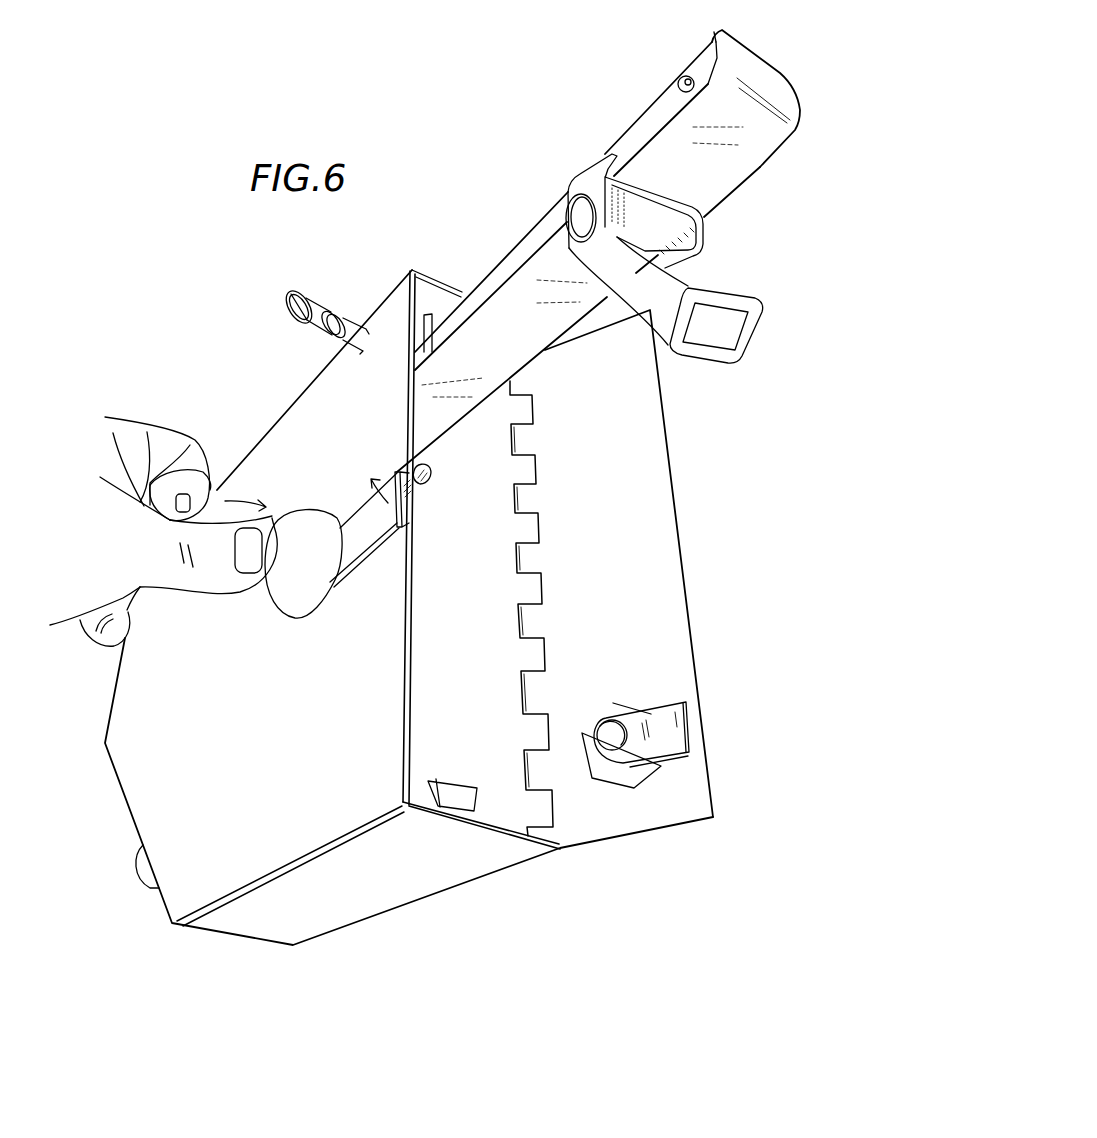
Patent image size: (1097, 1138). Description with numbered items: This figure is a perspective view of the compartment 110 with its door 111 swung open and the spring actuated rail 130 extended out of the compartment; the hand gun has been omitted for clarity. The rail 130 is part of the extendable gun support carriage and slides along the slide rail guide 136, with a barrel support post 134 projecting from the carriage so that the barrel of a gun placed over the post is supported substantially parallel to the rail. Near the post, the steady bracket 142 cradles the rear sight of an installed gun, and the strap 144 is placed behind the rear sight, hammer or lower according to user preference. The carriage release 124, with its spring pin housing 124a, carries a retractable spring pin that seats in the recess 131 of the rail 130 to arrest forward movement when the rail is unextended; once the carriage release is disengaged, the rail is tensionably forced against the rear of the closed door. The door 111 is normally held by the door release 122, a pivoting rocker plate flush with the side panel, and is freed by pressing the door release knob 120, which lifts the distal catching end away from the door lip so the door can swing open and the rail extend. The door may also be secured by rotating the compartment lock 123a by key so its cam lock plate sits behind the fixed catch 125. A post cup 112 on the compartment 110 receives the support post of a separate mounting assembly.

The compartment 110 is at (408, 897).
The door 111 is at (672, 575).
The post cup 112 is at (140, 860).
The door release knob 120 is at (303, 514).
The door release 122 is at (405, 507).
The compartment lock 123a is at (678, 703).
The carriage release 124 is at (288, 294).
The spring pin housing 124a is at (363, 320).
The fixed catch 125 is at (455, 792).
The rail 130 is at (513, 237).
The recess 131 is at (682, 78).
The barrel support post 134 is at (421, 467).
The slide rail guide 136 is at (714, 32).
The bracket 142 is at (704, 240).
The strap 144 is at (698, 347).